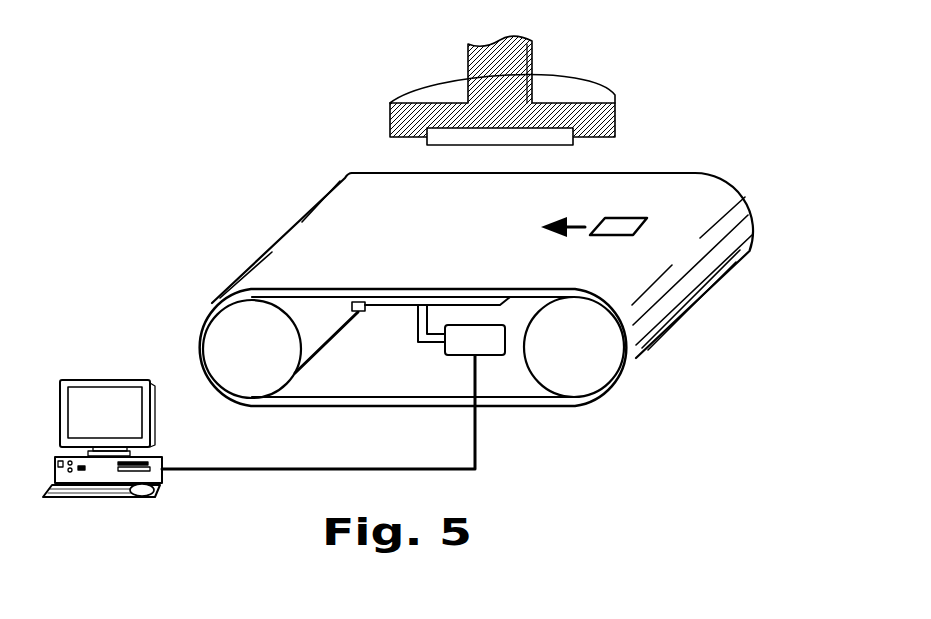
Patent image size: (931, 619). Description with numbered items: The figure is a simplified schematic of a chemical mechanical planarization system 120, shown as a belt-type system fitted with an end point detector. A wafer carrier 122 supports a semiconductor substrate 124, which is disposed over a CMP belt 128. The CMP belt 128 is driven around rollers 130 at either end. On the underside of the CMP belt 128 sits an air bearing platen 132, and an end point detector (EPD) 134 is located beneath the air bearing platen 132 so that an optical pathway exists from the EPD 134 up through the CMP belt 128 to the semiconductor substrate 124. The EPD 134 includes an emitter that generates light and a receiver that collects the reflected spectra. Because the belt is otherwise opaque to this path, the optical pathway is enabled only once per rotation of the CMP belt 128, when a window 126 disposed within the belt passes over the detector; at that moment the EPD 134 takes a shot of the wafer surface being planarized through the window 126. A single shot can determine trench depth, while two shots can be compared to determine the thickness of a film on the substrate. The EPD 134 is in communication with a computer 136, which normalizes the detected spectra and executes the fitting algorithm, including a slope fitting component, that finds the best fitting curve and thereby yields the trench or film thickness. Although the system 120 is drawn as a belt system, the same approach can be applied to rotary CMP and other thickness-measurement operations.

The CMP system 120 is at (693, 98).
The wafer carrier 122 is at (524, 63).
The semiconductor substrate 124 is at (525, 140).
The window 126 is at (638, 220).
The CMP belt 128 is at (723, 190).
The rollers 130 is at (248, 397).
The air bearing platen 132 is at (360, 312).
The end point detector (EPD) 134 is at (500, 357).
The computer 136 is at (110, 378).